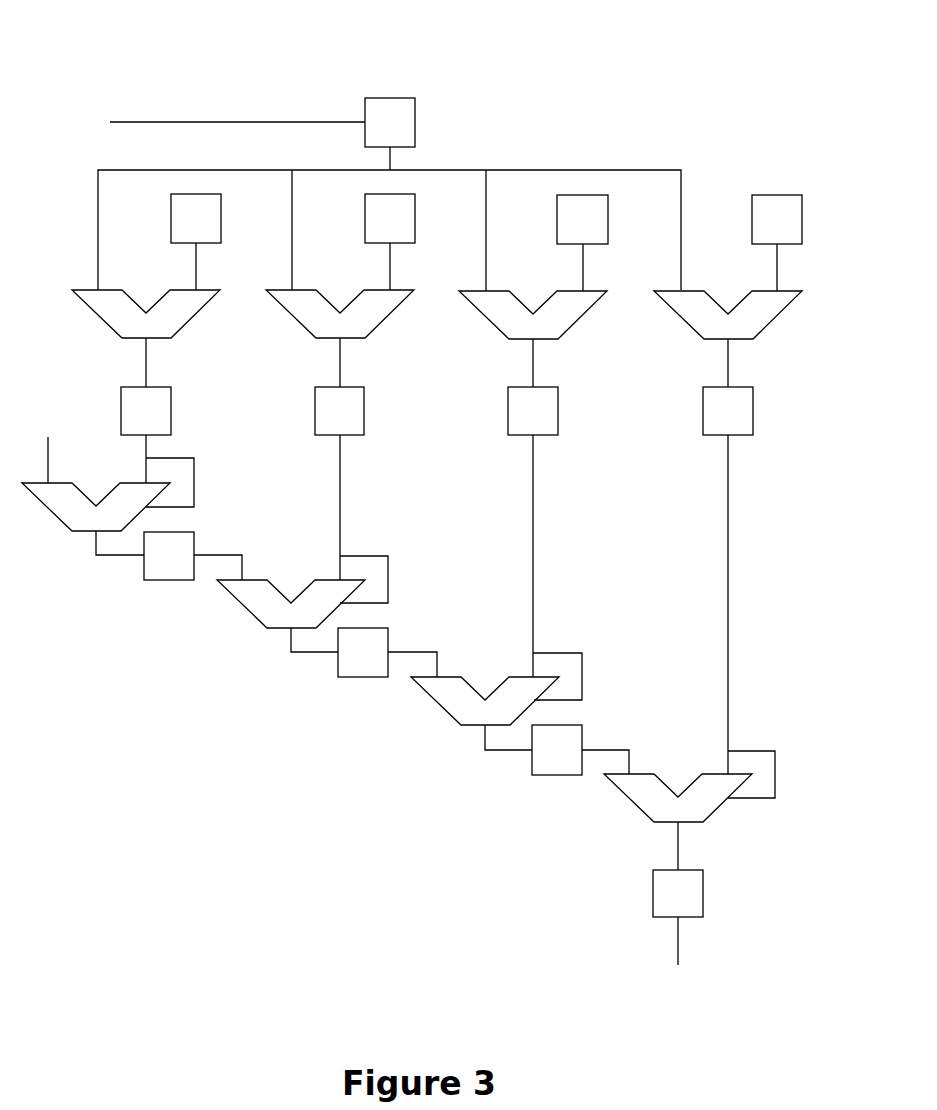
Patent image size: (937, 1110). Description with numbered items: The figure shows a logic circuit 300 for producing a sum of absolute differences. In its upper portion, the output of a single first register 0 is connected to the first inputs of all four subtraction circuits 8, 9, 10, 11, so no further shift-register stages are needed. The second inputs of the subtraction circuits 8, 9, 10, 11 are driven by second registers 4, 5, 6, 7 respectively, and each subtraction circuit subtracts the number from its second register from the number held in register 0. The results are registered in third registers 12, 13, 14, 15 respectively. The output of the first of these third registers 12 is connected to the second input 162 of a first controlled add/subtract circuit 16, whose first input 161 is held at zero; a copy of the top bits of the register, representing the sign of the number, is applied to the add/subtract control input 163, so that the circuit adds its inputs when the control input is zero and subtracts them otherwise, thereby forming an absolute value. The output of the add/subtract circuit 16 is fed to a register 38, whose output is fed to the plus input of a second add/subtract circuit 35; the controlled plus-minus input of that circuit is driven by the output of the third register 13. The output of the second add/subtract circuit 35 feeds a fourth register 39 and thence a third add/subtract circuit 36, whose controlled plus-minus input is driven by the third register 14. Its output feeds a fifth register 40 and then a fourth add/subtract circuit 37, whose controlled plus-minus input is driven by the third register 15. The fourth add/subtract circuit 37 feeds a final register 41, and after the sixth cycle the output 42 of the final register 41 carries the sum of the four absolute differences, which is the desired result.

The logic circuit 300 is at (66, 45).
The first register 0 is at (262, 134).
The second register 4 is at (196, 242).
The second register 5 is at (247, 242).
The second register 6 is at (393, 243).
The second register 7 is at (777, 243).
The subtraction circuit 8 is at (146, 338).
The subtraction circuit 9 is at (340, 338).
The subtraction circuit 10 is at (533, 339).
The subtraction circuit 11 is at (728, 339).
The third register 12 is at (146, 411).
The third register 13 is at (339, 411).
The third register 14 is at (533, 411).
The third register 15 is at (728, 411).
The controlled add/subtract circuit 16 is at (96, 507).
The first input 161 is at (33, 450).
The second input 162 is at (152, 471).
The add/subtract control input 163 is at (135, 532).
The second add/subtract circuit 35 is at (291, 616).
The third add/subtract circuit 36 is at (485, 713).
The fourth add/subtract circuit 37 is at (678, 822).
The third register 38 is at (193, 556).
The fourth register 39 is at (387, 652).
The fifth register 40 is at (580, 750).
The final register 41 is at (678, 893).
The output 42 is at (665, 942).